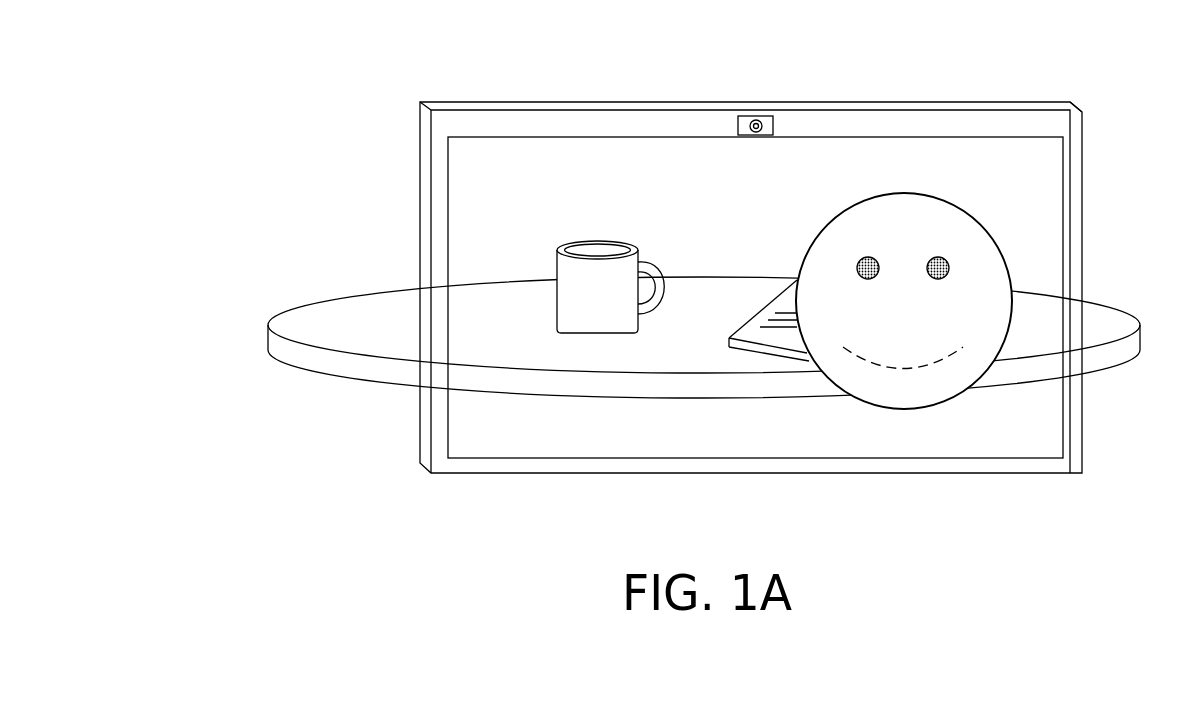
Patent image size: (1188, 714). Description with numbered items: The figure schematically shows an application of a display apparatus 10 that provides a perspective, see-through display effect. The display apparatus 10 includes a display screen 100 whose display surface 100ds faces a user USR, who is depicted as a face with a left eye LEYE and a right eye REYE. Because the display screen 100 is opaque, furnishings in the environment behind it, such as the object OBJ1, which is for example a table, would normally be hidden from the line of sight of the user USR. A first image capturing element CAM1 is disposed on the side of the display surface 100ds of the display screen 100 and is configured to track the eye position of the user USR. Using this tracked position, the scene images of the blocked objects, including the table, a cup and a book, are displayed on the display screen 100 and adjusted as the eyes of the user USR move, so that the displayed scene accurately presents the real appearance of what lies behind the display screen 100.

The display apparatus 10 is at (736, 249).
The display screen 100 is at (696, 258).
The display surface 100ds is at (479, 242).
The first image capturing element CAM1 is at (742, 117).
The object OBJ1 is at (273, 350).
The user USR is at (955, 287).
The left eye LEYE is at (862, 257).
The right eye REYE is at (940, 257).